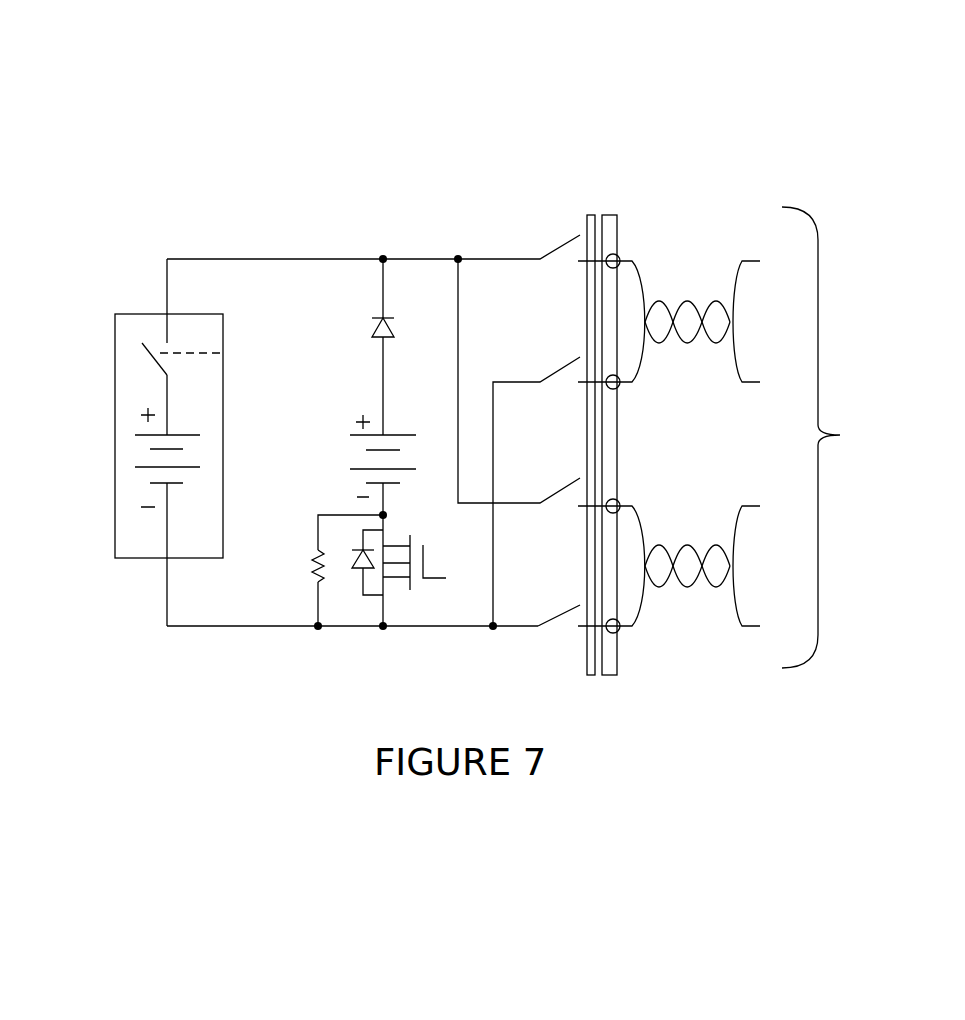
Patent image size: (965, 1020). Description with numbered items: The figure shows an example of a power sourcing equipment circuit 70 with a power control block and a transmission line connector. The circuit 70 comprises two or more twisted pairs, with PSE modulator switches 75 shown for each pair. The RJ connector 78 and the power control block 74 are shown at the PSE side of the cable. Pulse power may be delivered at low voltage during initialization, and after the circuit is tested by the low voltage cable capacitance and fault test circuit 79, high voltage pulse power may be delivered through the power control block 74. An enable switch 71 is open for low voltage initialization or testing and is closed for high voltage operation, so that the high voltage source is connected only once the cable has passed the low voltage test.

The circuit 70 is at (511, 79).
The enable switch 71 is at (164, 373).
The power control block 74 is at (588, 216).
The PSE modulator switch 75 is at (547, 630).
The RJ connector 78 is at (606, 214).
The low voltage cable capacitance and fault test circuit 79 is at (394, 614).